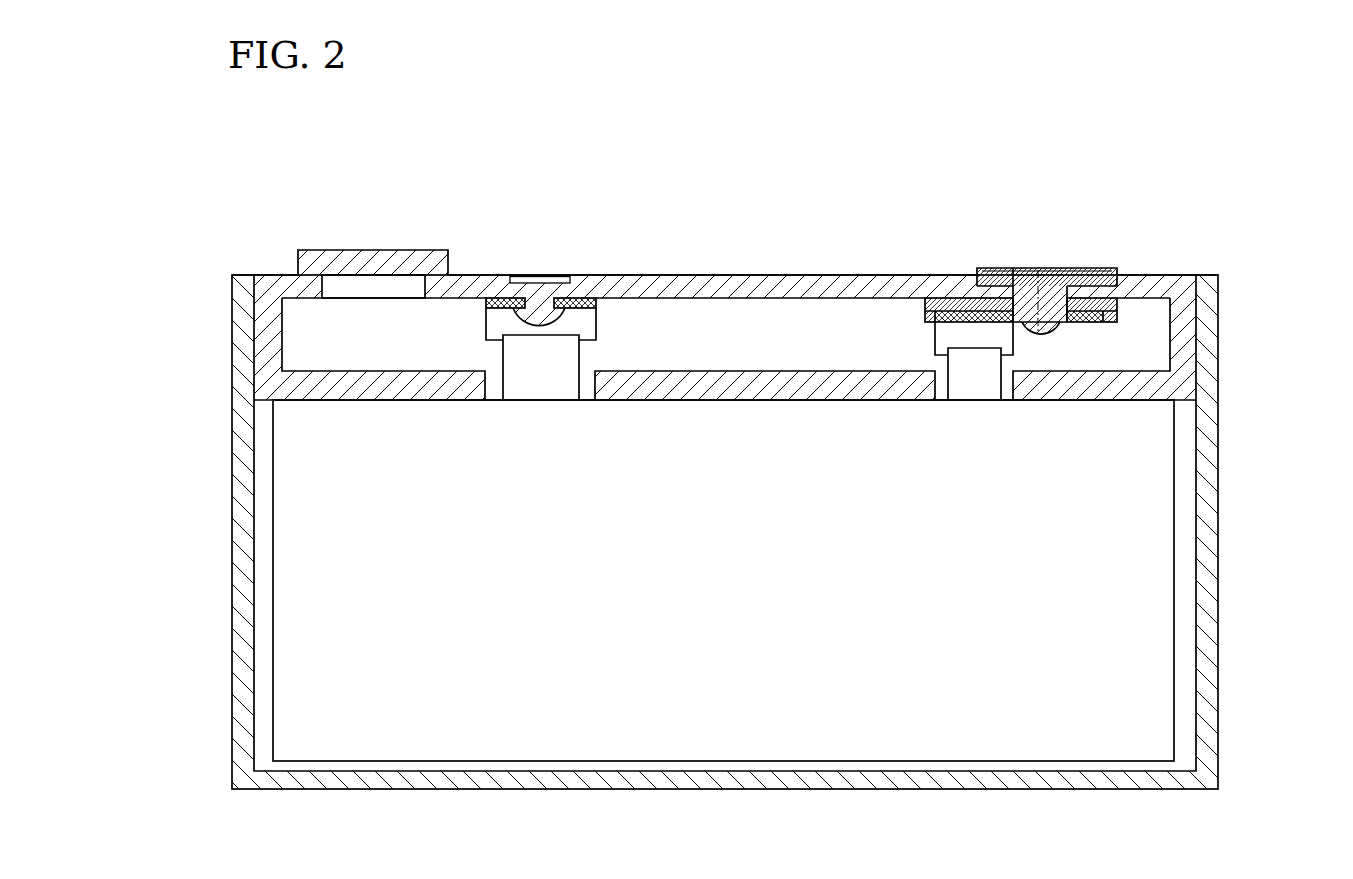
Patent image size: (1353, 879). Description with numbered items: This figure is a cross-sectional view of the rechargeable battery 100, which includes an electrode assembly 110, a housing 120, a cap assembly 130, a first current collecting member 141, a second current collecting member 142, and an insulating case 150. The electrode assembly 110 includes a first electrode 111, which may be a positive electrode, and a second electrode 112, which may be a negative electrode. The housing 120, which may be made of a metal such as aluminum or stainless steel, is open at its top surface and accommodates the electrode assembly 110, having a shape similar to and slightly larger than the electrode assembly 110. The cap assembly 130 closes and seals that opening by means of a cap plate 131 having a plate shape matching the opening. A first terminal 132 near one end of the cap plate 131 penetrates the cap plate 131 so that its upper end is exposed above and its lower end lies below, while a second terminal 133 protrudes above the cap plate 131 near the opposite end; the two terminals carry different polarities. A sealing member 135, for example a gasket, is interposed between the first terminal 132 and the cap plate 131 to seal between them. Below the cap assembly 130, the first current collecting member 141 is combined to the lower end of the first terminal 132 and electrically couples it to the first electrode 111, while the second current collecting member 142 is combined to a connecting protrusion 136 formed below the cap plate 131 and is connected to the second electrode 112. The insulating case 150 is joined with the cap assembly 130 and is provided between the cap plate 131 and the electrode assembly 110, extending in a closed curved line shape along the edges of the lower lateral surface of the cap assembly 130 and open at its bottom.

The rechargeable battery 100 is at (703, 88).
The electrode assembly 110 is at (1155, 480).
The first electrode 111 is at (987, 368).
The second electrode 112 is at (515, 363).
The housing 120 is at (1207, 555).
The cap assembly 130 is at (725, 291).
The cap plate 131 is at (872, 290).
The first terminal 132 is at (1037, 275).
The second terminal 133 is at (375, 262).
The sealing member 135 is at (1090, 280).
The connecting protrusion 136 is at (543, 305).
The first current collecting member 141 is at (953, 316).
The second current collecting member 142 is at (492, 302).
The insulating case 150 is at (667, 382).